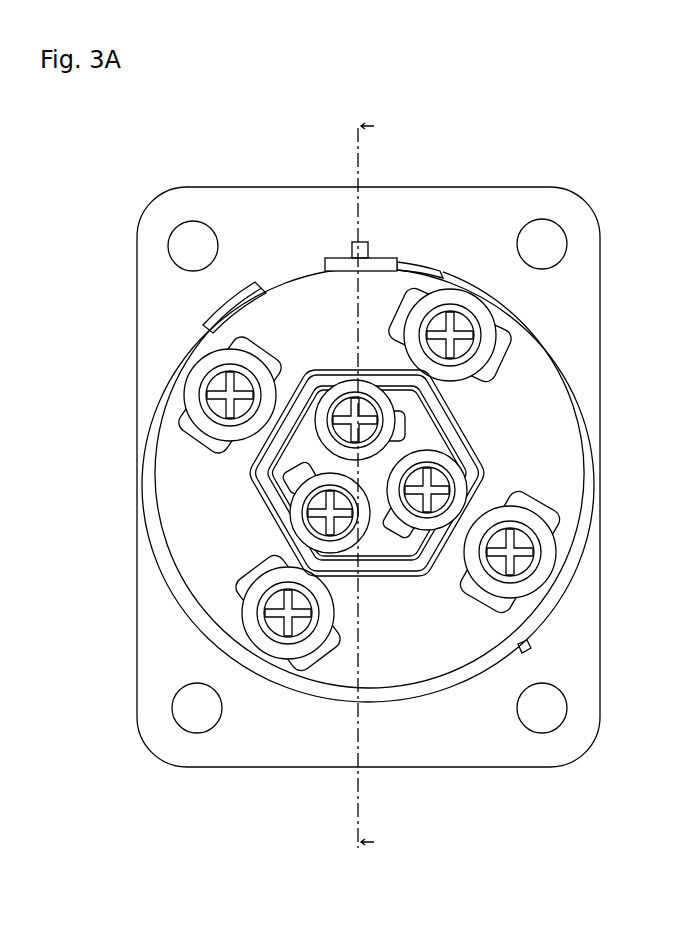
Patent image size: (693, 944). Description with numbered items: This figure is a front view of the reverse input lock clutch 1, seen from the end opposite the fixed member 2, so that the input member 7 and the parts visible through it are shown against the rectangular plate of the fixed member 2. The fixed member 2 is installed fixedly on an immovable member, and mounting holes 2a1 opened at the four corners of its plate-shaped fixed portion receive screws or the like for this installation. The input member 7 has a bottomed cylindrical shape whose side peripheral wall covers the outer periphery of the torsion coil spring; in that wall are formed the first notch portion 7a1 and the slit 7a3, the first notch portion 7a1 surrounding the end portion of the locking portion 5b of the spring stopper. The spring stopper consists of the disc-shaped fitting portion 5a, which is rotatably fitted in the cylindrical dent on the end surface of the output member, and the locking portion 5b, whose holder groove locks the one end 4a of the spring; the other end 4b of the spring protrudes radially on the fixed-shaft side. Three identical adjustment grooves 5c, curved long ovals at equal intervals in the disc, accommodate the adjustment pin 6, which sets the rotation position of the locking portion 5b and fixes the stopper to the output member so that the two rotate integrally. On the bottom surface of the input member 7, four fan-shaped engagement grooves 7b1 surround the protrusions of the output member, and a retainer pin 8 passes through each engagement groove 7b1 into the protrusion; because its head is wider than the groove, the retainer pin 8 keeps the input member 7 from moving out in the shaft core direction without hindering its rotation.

The reverse input lock clutch 1 is at (612, 182).
The fixed member 2 is at (454, 187).
The mounting holes 2a1 is at (155, 750).
The one end of the first elastic member 4a is at (366, 243).
The other end of the first elastic member 4b is at (526, 651).
The fitting portion 5a is at (386, 545).
The locking portion 5b is at (334, 258).
The adjustment grooves 5c is at (345, 480).
The adjustment pin 6 is at (323, 510).
The input member 7 is at (570, 450).
The first notch portion 7a1 is at (285, 283).
The slit 7a3 is at (259, 282).
The engagement grooves 7b1 is at (500, 374).
The retainer pin 8 is at (456, 334).